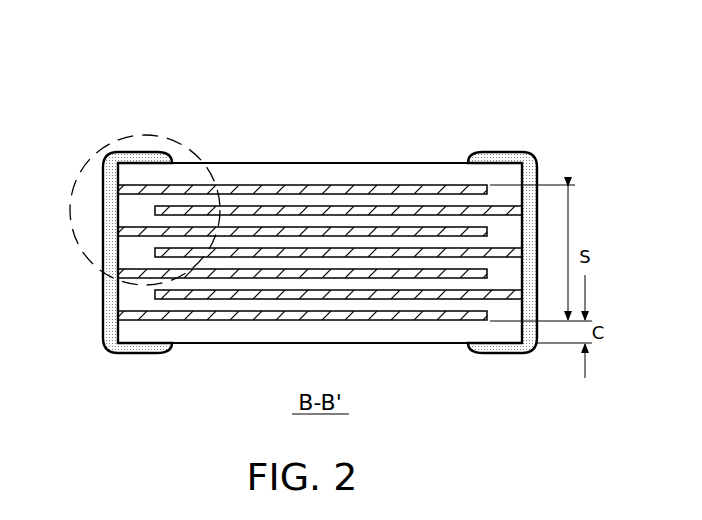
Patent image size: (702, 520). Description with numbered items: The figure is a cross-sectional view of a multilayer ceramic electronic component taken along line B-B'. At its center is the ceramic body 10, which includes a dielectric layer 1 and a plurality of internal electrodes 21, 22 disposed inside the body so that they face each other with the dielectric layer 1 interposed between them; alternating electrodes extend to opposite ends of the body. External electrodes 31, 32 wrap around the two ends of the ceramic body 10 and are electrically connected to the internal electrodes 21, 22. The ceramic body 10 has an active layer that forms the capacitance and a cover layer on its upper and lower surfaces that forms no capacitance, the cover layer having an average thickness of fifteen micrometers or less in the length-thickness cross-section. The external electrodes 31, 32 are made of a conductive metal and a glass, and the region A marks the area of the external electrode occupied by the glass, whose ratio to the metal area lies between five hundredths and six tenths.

The dielectric layer 1 is at (284, 242).
The ceramic body 10 is at (325, 162).
The internal electrode 21 is at (397, 188).
The internal electrode 22 is at (452, 208).
The external electrode 31 is at (108, 302).
The external electrode 32 is at (495, 351).
The area of the external electrodes occupied by the glass A is at (160, 137).